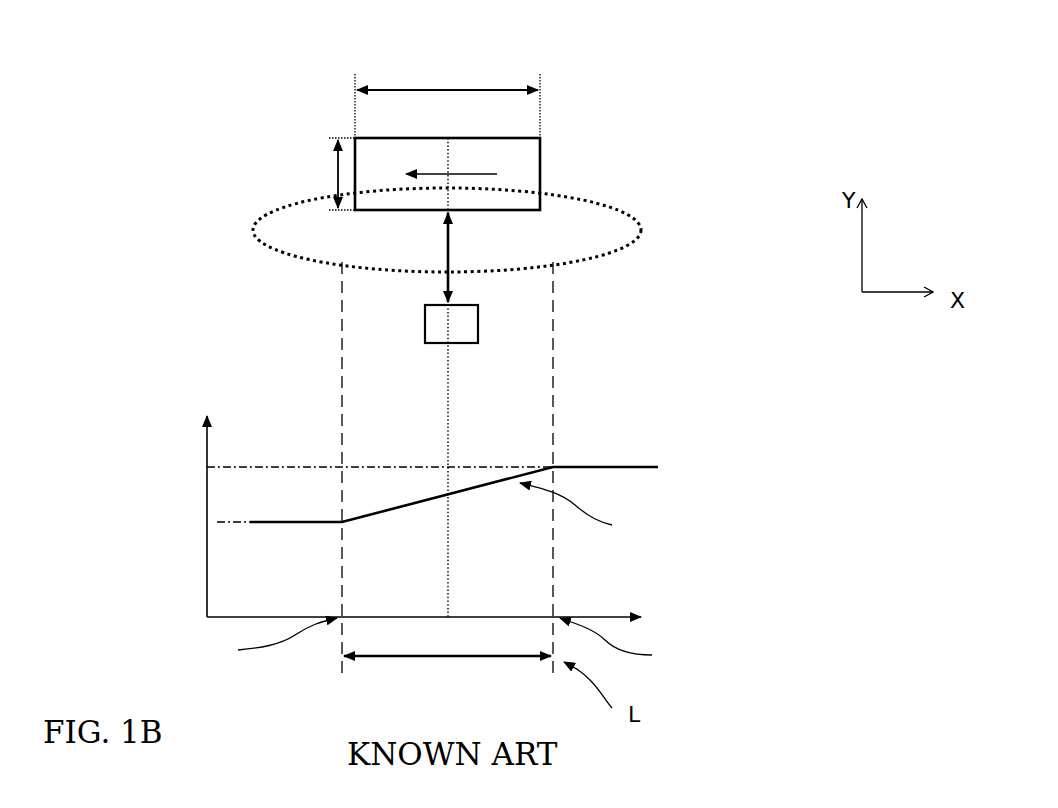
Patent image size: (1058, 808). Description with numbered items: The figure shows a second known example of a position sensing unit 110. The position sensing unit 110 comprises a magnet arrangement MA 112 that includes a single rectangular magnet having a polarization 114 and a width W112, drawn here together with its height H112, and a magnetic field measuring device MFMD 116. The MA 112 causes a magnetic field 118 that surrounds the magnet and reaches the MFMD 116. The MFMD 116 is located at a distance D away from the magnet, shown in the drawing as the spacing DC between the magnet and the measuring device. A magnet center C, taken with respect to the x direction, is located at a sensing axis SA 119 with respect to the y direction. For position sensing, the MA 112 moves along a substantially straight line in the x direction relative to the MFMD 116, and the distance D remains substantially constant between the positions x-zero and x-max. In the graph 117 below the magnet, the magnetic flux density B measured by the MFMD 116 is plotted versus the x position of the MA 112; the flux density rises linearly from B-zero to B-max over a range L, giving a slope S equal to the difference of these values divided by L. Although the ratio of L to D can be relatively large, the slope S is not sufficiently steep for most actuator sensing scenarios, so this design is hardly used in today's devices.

The position sensing unit 110 is at (113, 112).
The MA 112 is at (448, 129).
The width W112 is at (398, 87).
The magnet height H112 is at (334, 172).
The polarization 114 is at (396, 174).
The MFMD 116 is at (484, 330).
The graph 117 is at (670, 420).
The magnetic field 118 is at (602, 191).
The SA 119 is at (439, 597).
The distance between magnet and sensor DC is at (457, 243).